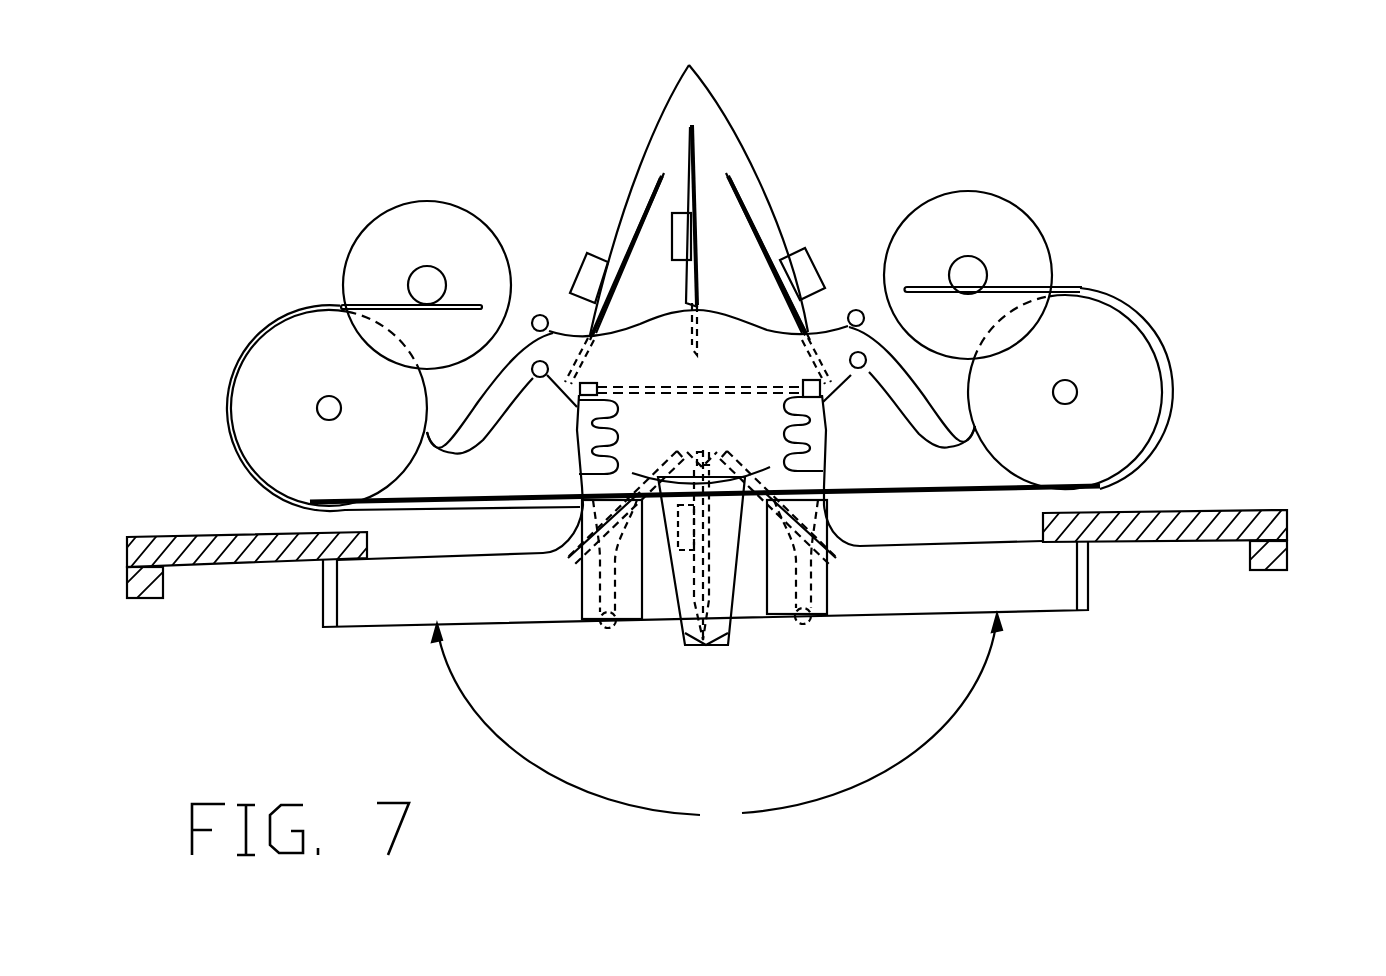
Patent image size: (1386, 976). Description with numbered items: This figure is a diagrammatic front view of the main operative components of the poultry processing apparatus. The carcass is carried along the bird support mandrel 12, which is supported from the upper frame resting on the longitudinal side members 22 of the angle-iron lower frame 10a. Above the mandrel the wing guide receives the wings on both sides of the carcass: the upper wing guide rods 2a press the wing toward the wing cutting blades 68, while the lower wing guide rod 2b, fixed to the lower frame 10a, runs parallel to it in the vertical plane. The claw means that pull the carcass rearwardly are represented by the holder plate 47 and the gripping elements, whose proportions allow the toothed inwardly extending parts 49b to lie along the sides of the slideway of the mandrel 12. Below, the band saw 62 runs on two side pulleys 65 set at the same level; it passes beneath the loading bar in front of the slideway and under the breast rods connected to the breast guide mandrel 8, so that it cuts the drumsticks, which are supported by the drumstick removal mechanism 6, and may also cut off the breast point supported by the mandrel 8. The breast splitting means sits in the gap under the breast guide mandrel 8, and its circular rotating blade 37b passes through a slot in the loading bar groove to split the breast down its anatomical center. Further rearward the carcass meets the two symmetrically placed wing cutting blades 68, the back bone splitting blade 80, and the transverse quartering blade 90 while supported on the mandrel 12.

The wing cutting blades 68 is at (699, 183).
The back bone splitting blade 80 is at (693, 285).
The holder plate 47 is at (748, 380).
The transverse quartering blade 90 is at (1000, 230).
The side pulleys 65 is at (1132, 397).
The upper wing guide rods 2a is at (538, 314).
The lower wing guide rod 2b is at (532, 378).
The inwardly extending part 49b is at (828, 427).
The band saw 62 is at (330, 507).
The longitudinal side members 22 is at (1262, 523).
The lower frame 10a is at (1260, 572).
The circular rotating blade 37b is at (701, 625).
The breast guide mandrel 8 is at (715, 622).
The bird support mandrel 12 is at (793, 567).
The drumstick removal mechanism 6 is at (717, 721).